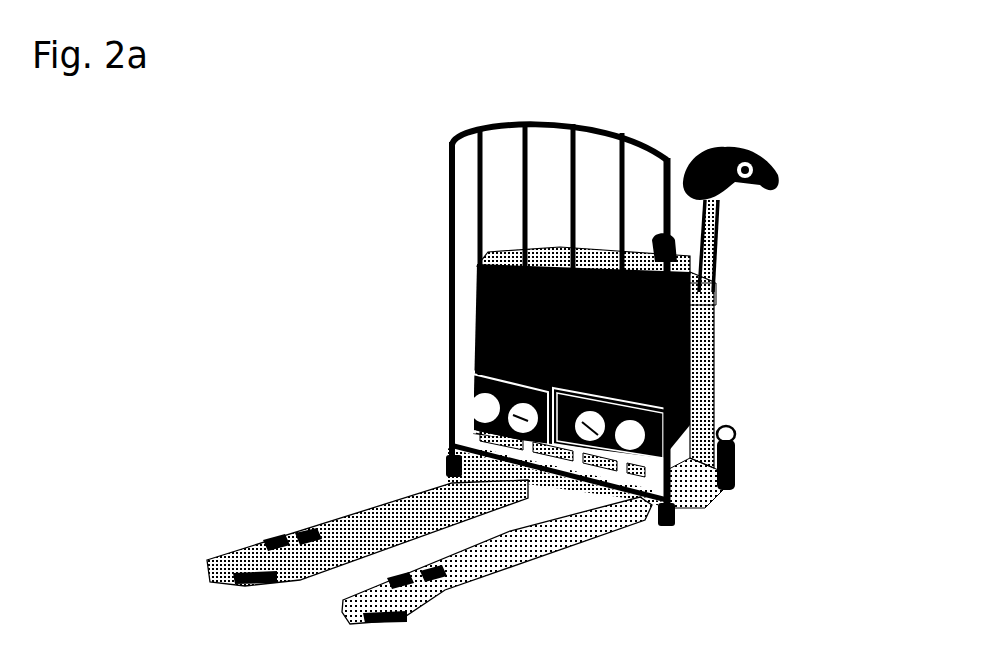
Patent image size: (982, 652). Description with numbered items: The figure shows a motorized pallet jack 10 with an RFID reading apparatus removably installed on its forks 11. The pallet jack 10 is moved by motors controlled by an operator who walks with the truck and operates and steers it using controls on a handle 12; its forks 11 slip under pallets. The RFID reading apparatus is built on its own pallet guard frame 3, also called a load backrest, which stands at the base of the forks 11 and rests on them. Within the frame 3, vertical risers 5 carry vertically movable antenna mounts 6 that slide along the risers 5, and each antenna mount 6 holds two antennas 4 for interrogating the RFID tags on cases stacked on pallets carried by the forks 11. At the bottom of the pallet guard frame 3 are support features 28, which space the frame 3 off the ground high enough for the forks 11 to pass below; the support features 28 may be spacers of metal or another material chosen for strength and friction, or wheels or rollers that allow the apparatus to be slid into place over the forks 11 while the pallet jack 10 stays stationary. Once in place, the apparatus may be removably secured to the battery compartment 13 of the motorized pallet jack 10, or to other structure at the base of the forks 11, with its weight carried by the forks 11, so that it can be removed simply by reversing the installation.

The pallet guard frame 3 is at (456, 136).
The risers 5 is at (483, 157).
The antenna mounts 6 is at (463, 375).
The antennas 4 is at (496, 410).
The motorized pallet jack 10 is at (717, 327).
The forks 11 is at (490, 558).
The handle 12 is at (768, 172).
The battery compartment 13 is at (690, 300).
The support feature 28 is at (450, 463).